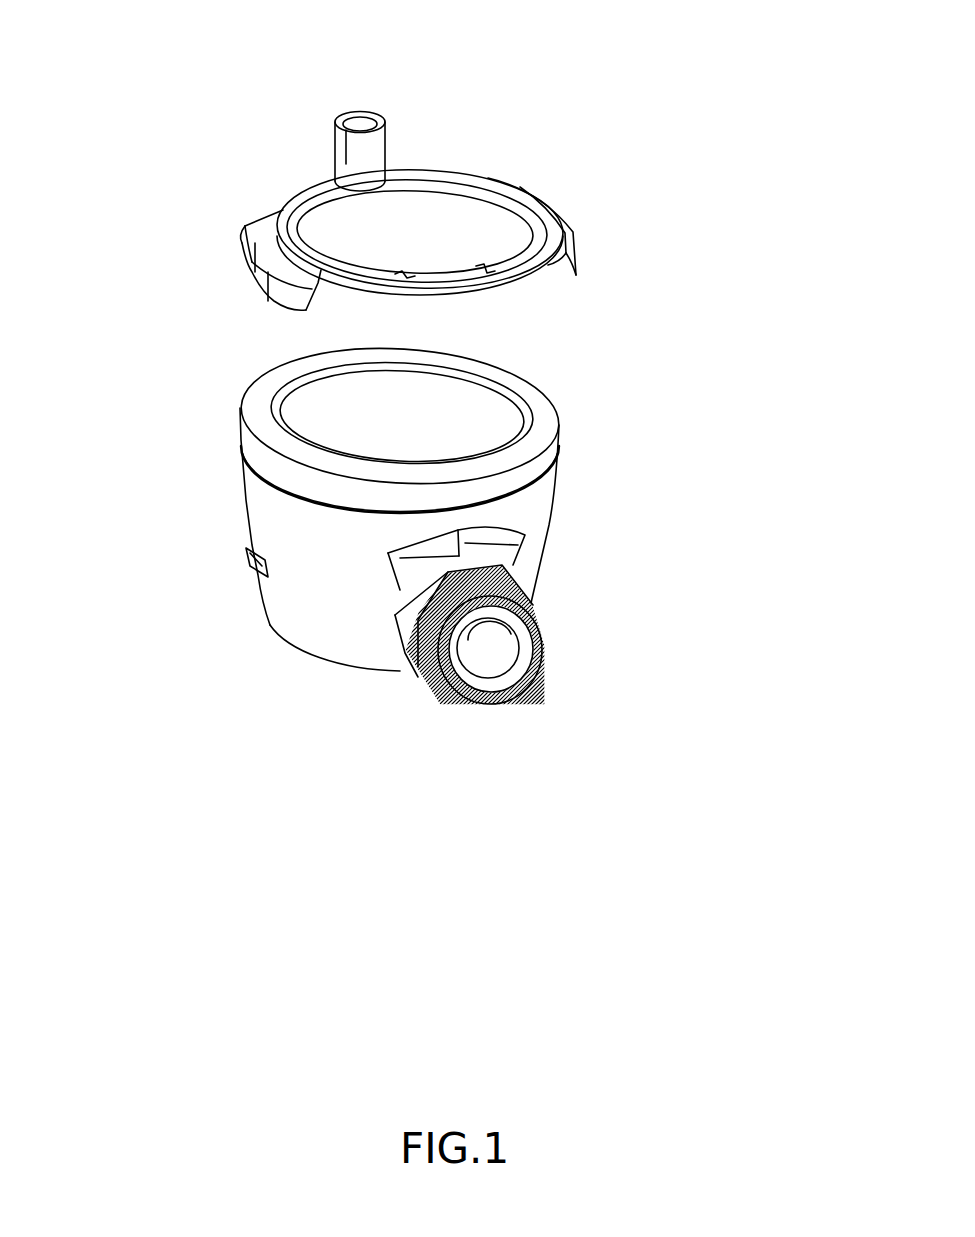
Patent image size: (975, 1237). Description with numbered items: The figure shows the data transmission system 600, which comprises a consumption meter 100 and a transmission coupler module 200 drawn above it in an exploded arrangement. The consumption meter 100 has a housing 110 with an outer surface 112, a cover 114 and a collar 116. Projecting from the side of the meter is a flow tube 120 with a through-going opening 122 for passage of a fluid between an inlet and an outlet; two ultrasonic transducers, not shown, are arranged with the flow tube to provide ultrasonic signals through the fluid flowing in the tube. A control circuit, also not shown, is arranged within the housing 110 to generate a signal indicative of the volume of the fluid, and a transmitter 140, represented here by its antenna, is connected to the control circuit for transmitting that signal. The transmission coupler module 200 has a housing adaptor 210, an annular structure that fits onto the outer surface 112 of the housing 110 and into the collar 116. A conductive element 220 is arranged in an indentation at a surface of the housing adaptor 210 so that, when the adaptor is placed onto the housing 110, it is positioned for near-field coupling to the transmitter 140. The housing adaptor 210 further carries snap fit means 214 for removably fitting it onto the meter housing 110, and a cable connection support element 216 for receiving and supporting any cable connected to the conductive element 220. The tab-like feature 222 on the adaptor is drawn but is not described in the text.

The data transmission system 600 is at (204, 76).
The transmission coupler module 200 is at (523, 185).
The housing adaptor 210 is at (283, 200).
The snap fit means 214 is at (240, 245).
The cable connection support element 216 is at (383, 149).
The conductive element 220 is at (355, 282).
The right tab 222 is at (530, 267).
The consumption meter 100 is at (244, 496).
The housing 110 is at (545, 557).
The outer surface 112 is at (528, 512).
The cover 114 is at (422, 392).
The collar 116 is at (546, 426).
The transmitter 140 is at (291, 405).
The flow tube 120 is at (545, 633).
The through-going opening 122 is at (470, 655).